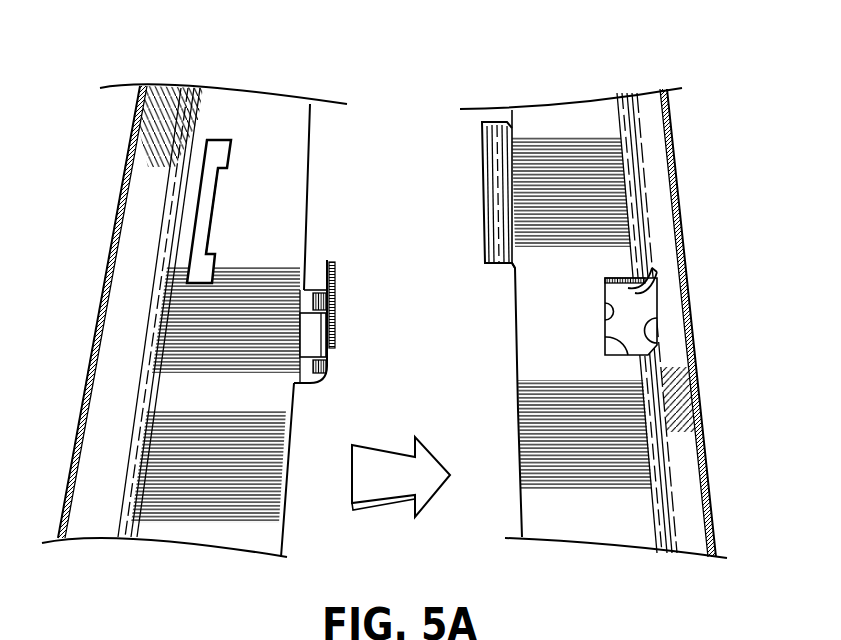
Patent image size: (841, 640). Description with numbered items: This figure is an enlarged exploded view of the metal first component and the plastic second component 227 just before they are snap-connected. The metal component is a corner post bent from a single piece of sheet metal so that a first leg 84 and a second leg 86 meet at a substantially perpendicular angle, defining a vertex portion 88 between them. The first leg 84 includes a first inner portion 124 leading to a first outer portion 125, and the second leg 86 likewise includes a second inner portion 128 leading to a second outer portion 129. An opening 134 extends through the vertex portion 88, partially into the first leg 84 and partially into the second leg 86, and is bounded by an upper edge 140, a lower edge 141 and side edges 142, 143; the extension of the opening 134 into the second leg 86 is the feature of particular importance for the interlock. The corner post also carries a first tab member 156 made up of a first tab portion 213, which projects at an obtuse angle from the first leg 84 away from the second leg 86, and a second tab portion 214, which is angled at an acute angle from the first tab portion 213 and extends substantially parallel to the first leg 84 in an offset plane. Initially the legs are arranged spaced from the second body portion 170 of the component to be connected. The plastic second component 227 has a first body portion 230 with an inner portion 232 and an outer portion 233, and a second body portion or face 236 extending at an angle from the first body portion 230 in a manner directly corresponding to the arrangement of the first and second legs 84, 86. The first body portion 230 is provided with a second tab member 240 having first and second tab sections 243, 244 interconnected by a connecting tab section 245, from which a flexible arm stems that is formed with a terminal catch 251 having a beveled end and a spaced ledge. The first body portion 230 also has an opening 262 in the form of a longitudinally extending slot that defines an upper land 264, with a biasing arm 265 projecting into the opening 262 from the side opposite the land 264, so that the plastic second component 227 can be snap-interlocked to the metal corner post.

The first leg 84 is at (573, 133).
The second leg 86 is at (655, 143).
The vertex portion 88 is at (667, 555).
The first inner portion 124 is at (608, 113).
The first outer portion 125 is at (533, 123).
The second inner portion 128 is at (682, 550).
The second outer portion 129 is at (690, 475).
The opening 134 is at (657, 299).
The upper edge 140 is at (652, 283).
The lower edge 141 is at (620, 348).
The side edge 142 is at (660, 335).
The side edge 143 is at (622, 318).
The first tab member 156 is at (467, 134).
The second body portion 170 is at (236, 635).
The first tab portion 213 is at (510, 267).
The second tab portion 214 is at (487, 212).
The second component 227 is at (290, 88).
The first body portion 230 is at (269, 140).
The inner portion 232 is at (218, 115).
The outer portion 233 is at (287, 185).
The second body portion 236 is at (123, 280).
The second tab member 240 is at (361, 330).
The first tab section 243 is at (310, 300).
The second tab section 244 is at (307, 372).
The connecting tab section 245 is at (337, 283).
The terminal catch 251 is at (337, 325).
The opening 262 is at (241, 171).
The upper land 264 is at (192, 204).
The biasing arm 265 is at (213, 207).